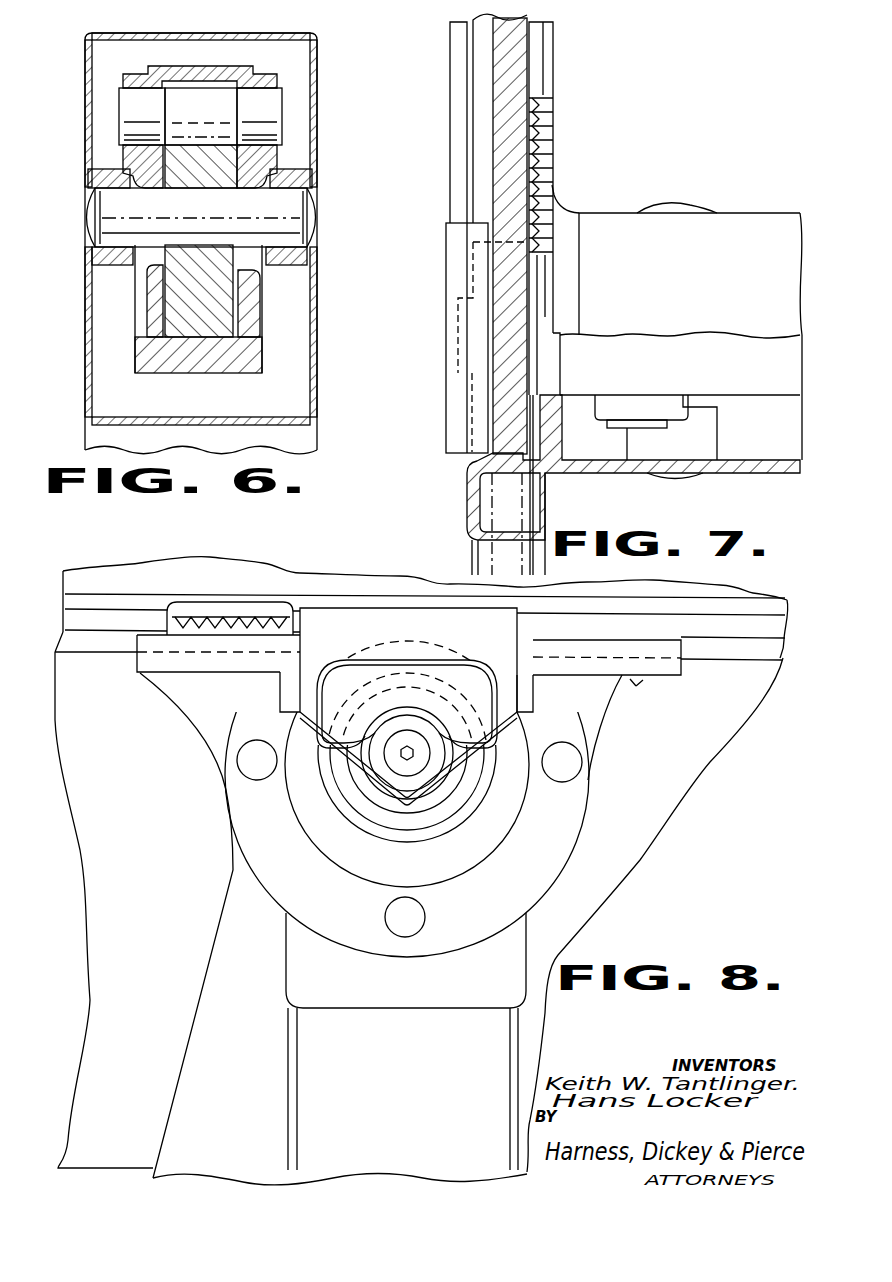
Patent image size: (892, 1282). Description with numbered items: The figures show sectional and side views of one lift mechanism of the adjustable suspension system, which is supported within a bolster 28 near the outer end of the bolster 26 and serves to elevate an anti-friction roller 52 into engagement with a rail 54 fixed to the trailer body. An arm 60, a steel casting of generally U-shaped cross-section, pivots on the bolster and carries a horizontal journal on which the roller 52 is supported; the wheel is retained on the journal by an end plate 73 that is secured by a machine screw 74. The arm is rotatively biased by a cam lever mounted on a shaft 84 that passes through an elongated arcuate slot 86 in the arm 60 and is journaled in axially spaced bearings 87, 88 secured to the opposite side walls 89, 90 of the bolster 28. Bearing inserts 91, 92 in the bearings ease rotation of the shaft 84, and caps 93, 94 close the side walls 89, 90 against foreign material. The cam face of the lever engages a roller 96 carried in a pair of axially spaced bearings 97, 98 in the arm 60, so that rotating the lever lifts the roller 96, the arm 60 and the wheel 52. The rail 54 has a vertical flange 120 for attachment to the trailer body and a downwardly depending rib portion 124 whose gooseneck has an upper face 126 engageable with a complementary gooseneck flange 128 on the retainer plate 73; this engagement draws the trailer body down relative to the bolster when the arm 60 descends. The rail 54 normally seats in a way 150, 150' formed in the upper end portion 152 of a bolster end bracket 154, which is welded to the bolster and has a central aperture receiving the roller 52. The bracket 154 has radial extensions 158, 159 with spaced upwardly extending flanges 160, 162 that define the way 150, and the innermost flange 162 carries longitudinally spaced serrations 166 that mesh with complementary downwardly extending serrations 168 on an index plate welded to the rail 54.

In FIG. 7, the bolster 26 is at (617, 210).
In FIG. 6, the bolster 28 is at (363, 76).
In FIG. 8, the bolster 28 is at (288, 1062).
In FIG. 7, the anti-friction roller 52 is at (539, 431).
In FIG. 8, the anti-friction roller 52 is at (480, 845).
In FIG. 7, the rail 54 is at (495, 103).
In FIG. 8, the rail 54 is at (78, 655).
In FIG. 7, the arm 60 is at (778, 405).
In FIG. 7, the end plate 73 is at (444, 346).
In FIG. 8, the end plate 73 is at (522, 686).
In FIG. 8, the machine screw 74 is at (409, 780).
In FIG. 6, the shaft 84 is at (294, 218).
In FIG. 6, the elongated arcuate slot 86 is at (244, 272).
In FIG. 6, the bearing 87 is at (121, 270).
In FIG. 6, the bearing 88 is at (292, 270).
In FIG. 6, the side wall 89 is at (85, 126).
In FIG. 6, the side wall 90 is at (318, 338).
In FIG. 6, the bearing insert 91 is at (98, 176).
In FIG. 6, the bearing insert 92 is at (293, 168).
In FIG. 6, the cap 93 is at (86, 205).
In FIG. 7, the cap 93 is at (682, 211).
In FIG. 6, the cap 94 is at (320, 198).
In FIG. 6, the roller 96 is at (193, 90).
In FIG. 7, the roller 96 is at (628, 433).
In FIG. 6, the bearing 97 is at (143, 97).
In FIG. 6, the bearing 98 is at (255, 100).
In FIG. 8, the vertical flange 120 is at (212, 560).
In FIG. 8, the rib portion 124 is at (122, 642).
In FIG. 7, the upper face 126 is at (478, 50).
In FIG. 8, the upper face 126 is at (103, 630).
In FIG. 8, the gooseneck flange 128 is at (395, 623).
In FIG. 8, the way 150 is at (438, 660).
In FIG. 8, the lock bar end 150' is at (130, 717).
In FIG. 8, the upper end portion 152 is at (288, 625).
In FIG. 7, the bolster end bracket 154 is at (465, 492).
In FIG. 8, the bolster end bracket 154 is at (592, 817).
In FIG. 8, the radial extension 158 is at (208, 693).
In FIG. 8, the radial extension 159 is at (636, 686).
In FIG. 7, the flange 160 is at (455, 168).
In FIG. 8, the flange 160 is at (627, 648).
In FIG. 7, the innermost flange 162 is at (541, 74).
In FIG. 7, the serrations 166 is at (548, 137).
In FIG. 8, the serrations 166 is at (236, 630).
In FIG. 8, the serrations 168 is at (247, 616).